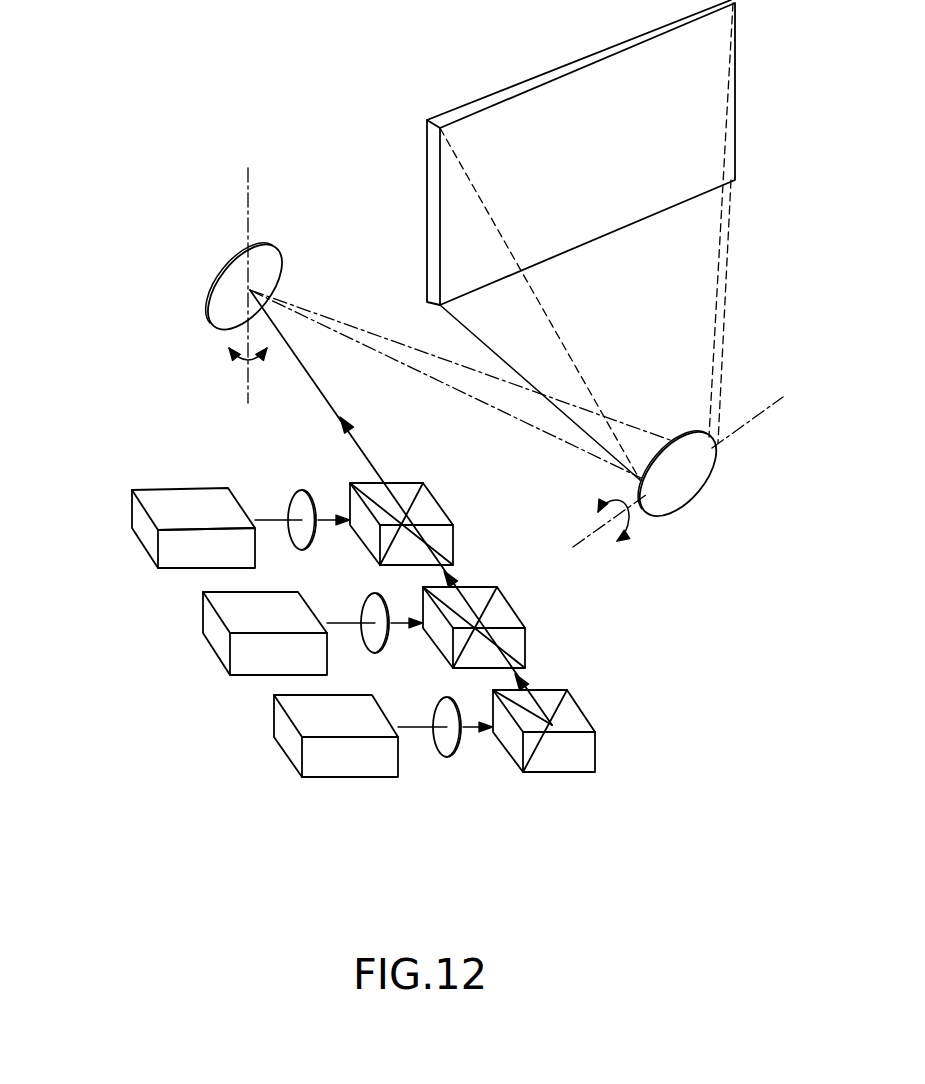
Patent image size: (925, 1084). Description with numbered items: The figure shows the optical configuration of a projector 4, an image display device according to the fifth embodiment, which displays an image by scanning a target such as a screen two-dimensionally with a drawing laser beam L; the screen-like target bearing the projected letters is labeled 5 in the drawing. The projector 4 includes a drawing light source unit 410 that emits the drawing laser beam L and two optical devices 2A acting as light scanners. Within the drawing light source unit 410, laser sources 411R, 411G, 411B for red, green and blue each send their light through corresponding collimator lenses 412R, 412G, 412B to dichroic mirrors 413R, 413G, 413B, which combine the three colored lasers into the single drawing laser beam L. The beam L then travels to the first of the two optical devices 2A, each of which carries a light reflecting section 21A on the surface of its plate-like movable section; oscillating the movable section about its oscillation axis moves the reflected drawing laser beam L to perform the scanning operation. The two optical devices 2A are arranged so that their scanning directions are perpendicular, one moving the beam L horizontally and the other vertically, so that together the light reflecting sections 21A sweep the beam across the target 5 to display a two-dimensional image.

The projector 4 is at (128, 135).
The screen 5 is at (738, 55).
The optical device 2A is at (191, 264).
The light reflecting section 21A is at (268, 267).
The drawing laser beam L is at (345, 438).
The drawing light source unit 410 is at (282, 823).
The laser source 411B is at (172, 517).
The collimator lens 412B is at (297, 503).
The dichroic mirror 413B is at (442, 507).
The laser source 411G is at (243, 620).
The collimator lens 412G is at (368, 598).
The dichroic mirror 413G is at (520, 602).
The laser source 411R is at (312, 722).
The collimator lens 412R is at (442, 745).
The dichroic mirror 413R is at (583, 702).